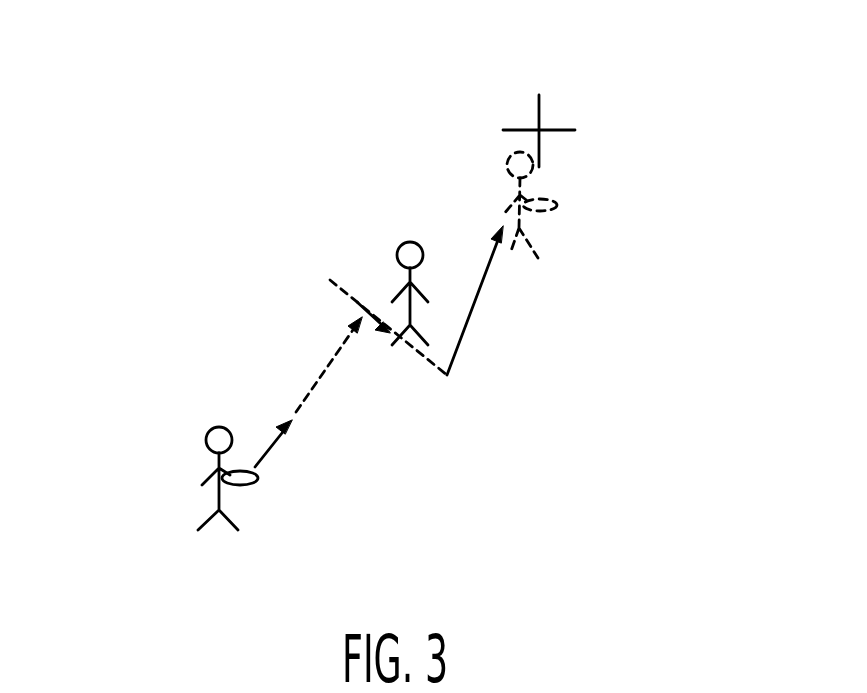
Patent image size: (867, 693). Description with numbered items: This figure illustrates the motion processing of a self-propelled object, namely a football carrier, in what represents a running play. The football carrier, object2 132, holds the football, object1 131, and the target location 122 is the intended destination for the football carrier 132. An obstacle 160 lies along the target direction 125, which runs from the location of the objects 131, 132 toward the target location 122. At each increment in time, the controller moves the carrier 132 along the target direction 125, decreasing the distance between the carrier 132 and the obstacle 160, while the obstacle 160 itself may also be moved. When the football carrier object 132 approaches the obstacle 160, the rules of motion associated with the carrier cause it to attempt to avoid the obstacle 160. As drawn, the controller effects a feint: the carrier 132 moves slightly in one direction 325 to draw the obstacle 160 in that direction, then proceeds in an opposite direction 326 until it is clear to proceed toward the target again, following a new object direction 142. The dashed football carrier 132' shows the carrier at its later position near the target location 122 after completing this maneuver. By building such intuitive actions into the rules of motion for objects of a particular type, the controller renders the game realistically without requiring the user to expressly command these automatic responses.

The target location 122 is at (539, 130).
The football carrier object at later position 132' is at (578, 205).
The obstacle 160 is at (399, 266).
The target direction 125 is at (268, 452).
The feint direction 325 is at (352, 323).
The opposite direction 326 is at (387, 327).
The new object direction 142 is at (477, 312).
The object1 (football) 131 is at (252, 486).
The object2 (football carrier) 132 is at (152, 513).